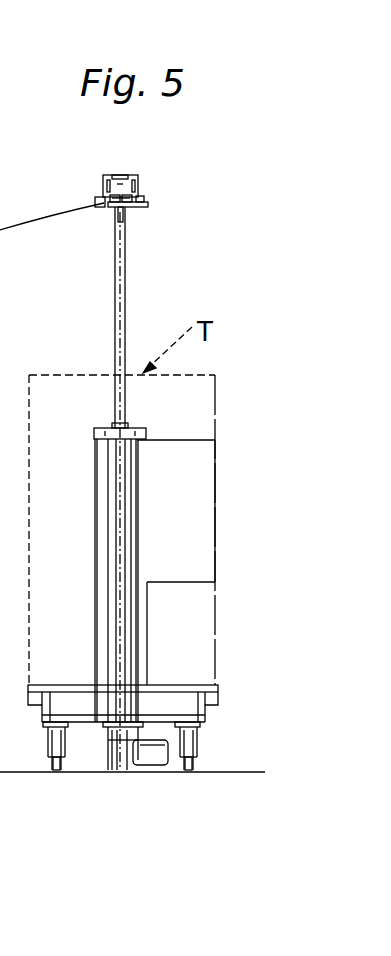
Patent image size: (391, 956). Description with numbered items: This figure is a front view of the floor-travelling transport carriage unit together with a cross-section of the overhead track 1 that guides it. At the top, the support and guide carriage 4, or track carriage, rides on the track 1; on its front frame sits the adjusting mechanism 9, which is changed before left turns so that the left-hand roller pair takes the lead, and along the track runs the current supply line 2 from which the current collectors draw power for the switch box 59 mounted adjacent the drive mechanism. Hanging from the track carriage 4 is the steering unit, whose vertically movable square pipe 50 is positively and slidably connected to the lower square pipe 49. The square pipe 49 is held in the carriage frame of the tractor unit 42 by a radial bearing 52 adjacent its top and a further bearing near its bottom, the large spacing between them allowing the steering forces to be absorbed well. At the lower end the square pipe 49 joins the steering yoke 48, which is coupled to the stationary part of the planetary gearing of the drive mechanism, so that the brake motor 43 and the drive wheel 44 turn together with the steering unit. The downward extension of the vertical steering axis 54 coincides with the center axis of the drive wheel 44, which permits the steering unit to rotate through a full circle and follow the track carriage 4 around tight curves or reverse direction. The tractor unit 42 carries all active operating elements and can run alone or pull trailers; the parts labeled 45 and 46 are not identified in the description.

The track 1 is at (137, 181).
The current supply line 2 is at (132, 176).
The support and guide carriage 4 is at (45, 685).
The adjusting mechanism 9 is at (143, 203).
The tractor unit 42 is at (143, 620).
The brake motor 43 is at (155, 758).
The drive wheel 44 is at (127, 770).
The caster 45 is at (57, 770).
The caster 46 is at (187, 768).
The steering yoke 48 is at (115, 767).
The square pipe 49 is at (132, 633).
The square pipe 50 is at (127, 250).
The radial bearing 52 is at (128, 424).
The vertical steering axis 54 is at (122, 667).
The switch box 59 is at (192, 460).